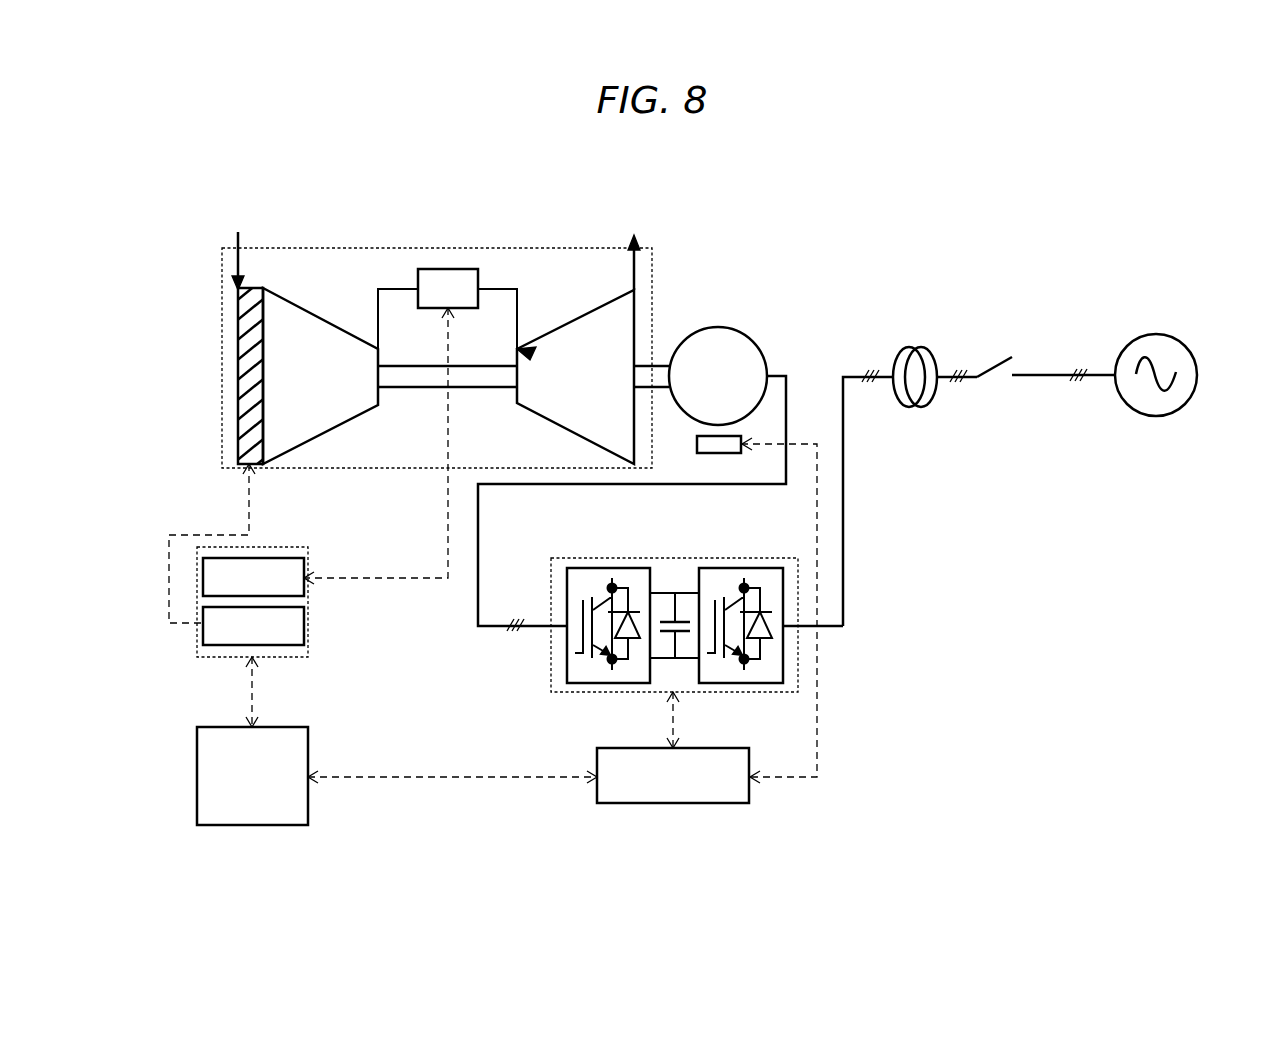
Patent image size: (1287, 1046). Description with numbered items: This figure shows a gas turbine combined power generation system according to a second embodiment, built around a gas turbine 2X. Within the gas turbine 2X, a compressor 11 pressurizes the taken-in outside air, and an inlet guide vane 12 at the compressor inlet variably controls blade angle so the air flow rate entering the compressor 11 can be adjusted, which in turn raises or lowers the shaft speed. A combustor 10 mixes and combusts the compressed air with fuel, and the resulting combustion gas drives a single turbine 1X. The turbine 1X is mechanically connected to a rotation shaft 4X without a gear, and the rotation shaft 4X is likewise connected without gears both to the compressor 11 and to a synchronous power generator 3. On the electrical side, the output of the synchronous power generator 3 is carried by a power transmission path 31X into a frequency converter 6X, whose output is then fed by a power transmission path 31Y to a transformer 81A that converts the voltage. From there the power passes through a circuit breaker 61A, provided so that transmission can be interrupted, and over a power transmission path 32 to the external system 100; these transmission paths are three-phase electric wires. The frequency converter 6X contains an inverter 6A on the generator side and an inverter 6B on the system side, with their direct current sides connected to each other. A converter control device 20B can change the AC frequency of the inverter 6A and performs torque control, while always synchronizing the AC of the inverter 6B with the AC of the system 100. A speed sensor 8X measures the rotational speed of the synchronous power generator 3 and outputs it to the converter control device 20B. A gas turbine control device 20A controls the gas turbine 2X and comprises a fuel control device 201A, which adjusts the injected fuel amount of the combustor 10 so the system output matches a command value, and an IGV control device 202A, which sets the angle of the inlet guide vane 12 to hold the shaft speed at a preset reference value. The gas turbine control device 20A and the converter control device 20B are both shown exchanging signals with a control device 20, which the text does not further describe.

The inlet guide vane 12 is at (256, 288).
The compressor 11 is at (310, 313).
The combustor 10 is at (440, 268).
The turbine 1X is at (612, 292).
The gas turbine 2X is at (655, 307).
The rotation shaft 4X is at (423, 388).
The synchronous power generator 3 is at (735, 327).
The power transmission path 31X is at (780, 372).
The power transmission path 31Y is at (857, 373).
The transformer 81A is at (922, 348).
The circuit breaker 61A is at (992, 357).
The power transmission path 32 is at (1048, 373).
The external system 100 is at (1157, 337).
The speed sensor 8X is at (716, 455).
The frequency converter 6X is at (550, 637).
The inverter 6A is at (570, 693).
The inverter 6B is at (790, 693).
The gas turbine control device 20A is at (198, 657).
The fuel control device 201A is at (207, 582).
The IGV control device 202A is at (213, 633).
The integrated control device 20 is at (305, 727).
The converter control device 20B is at (707, 797).